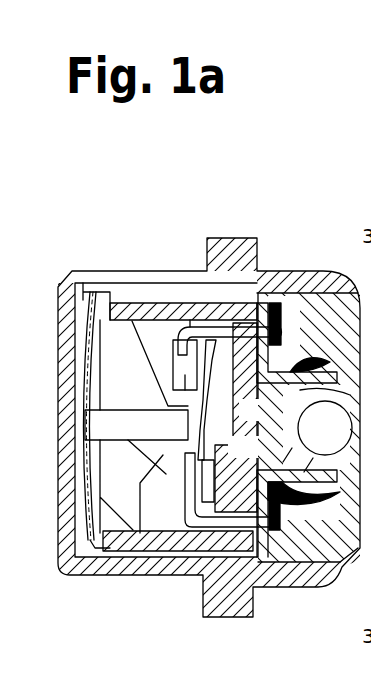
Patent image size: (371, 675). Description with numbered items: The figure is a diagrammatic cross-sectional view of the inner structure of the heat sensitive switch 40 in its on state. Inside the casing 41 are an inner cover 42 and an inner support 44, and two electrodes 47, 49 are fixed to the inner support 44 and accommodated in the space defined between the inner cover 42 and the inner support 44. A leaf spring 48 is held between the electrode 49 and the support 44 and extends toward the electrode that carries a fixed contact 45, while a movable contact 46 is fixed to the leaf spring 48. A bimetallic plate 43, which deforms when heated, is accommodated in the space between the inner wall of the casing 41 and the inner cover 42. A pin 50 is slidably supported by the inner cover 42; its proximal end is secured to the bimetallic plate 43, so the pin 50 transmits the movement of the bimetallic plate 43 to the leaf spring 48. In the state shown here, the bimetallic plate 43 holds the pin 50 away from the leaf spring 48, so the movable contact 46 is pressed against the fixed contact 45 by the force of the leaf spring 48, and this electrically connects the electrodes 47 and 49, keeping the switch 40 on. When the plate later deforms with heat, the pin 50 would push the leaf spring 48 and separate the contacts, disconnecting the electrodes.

The heat sensitive switch 40 is at (232, 187).
The casing 41 is at (203, 610).
The inner cover 42 is at (112, 527).
The bimetallic plate 43 is at (111, 392).
The inner support 44 is at (187, 305).
The fixed contact 45 is at (183, 361).
The movable contact 46 is at (231, 400).
The electrode 47 is at (265, 275).
The leaf spring 48 is at (221, 438).
The electrode 49 is at (190, 498).
The pin 50 is at (113, 437).